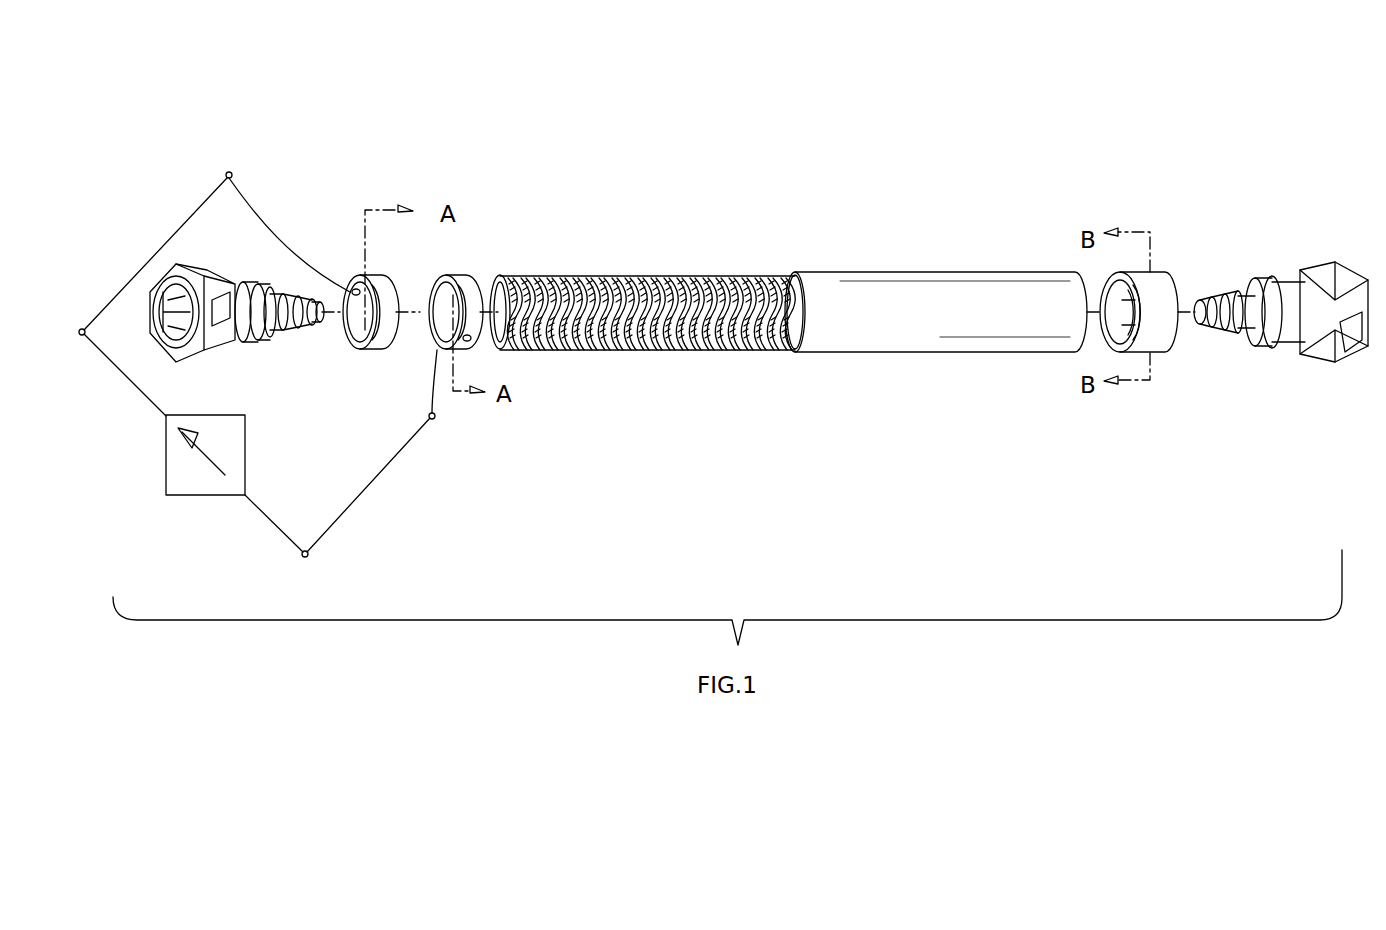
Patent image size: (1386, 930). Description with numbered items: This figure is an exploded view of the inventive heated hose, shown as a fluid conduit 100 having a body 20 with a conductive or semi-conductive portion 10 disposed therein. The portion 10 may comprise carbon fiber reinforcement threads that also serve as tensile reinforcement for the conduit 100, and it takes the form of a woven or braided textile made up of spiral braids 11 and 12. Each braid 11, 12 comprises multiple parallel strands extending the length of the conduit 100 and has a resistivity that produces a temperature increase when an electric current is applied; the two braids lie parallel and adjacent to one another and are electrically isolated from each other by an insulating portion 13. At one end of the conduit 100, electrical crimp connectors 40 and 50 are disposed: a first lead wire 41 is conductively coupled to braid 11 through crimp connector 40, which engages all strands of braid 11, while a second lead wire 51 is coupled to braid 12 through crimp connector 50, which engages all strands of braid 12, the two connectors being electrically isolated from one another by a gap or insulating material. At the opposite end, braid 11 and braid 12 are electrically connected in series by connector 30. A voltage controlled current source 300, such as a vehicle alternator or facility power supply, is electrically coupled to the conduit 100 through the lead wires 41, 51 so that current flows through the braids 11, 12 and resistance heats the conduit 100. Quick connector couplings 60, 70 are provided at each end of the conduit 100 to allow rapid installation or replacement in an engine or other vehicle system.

The conductive or semi-conductive portion 10 is at (645, 313).
The spiral braid 11 is at (675, 285).
The spiral braid 12 is at (752, 283).
The insulating portion 13 is at (577, 288).
The body 20 is at (905, 352).
The connector 30 is at (1163, 353).
The crimp connector 40 is at (448, 275).
The lead wire 41 is at (427, 392).
The crimp connector 50 is at (383, 350).
The lead wire 51 is at (256, 205).
The quick connector coupling 60 is at (1330, 262).
The quick connector coupling 70 is at (230, 355).
The fluid conduit 100 is at (1023, 106).
The voltage controlled current source 300 is at (190, 497).